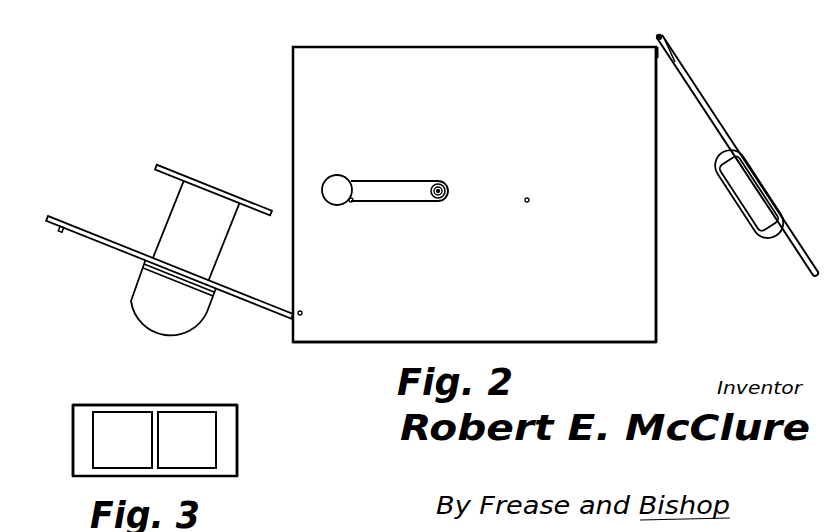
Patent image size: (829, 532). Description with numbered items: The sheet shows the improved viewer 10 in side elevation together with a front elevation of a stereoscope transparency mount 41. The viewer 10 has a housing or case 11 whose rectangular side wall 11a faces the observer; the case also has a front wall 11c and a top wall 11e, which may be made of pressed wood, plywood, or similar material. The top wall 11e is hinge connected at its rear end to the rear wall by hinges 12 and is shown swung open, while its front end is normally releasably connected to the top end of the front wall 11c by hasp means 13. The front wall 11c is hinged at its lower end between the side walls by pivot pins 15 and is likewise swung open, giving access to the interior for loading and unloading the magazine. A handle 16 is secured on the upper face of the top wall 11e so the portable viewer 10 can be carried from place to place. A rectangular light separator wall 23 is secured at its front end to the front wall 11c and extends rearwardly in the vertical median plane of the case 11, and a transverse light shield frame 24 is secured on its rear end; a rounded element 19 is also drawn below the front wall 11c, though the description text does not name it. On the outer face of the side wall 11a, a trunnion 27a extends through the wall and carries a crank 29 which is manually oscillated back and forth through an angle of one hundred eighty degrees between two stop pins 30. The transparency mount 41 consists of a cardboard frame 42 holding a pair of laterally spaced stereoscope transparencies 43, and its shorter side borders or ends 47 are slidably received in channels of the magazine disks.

In FIG. 2, the viewer 10 is at (621, 344).
In FIG. 2, the housing or case 11 is at (657, 218).
In FIG. 2, the side wall 11a is at (474, 316).
In FIG. 2, the front wall 11c is at (240, 298).
In FIG. 2, the top wall 11e is at (737, 169).
In FIG. 2, the hinges 12 is at (663, 34).
In FIG. 2, the hasp means 13 is at (63, 236).
In FIG. 2, the pivot pins 15 is at (303, 312).
In FIG. 2, the handle 16 is at (741, 226).
In FIG. 2, the cup receptacle 19 is at (134, 283).
In FIG. 2, the light separator wall 23 is at (196, 237).
In FIG. 2, the light shield frame 24 is at (164, 164).
In FIG. 2, the trunnion 27a is at (447, 194).
In FIG. 2, the crank 29 is at (386, 203).
In FIG. 2, the stop pins 30 is at (350, 203).
In FIG. 3, the stereoscope transparency mount 41 is at (240, 458).
In FIG. 3, the cardboard frame 42 is at (199, 406).
In FIG. 3, the stereoscope transparencies 43 is at (154, 440).
In FIG. 3, the side borders or ends 47 is at (73, 424).